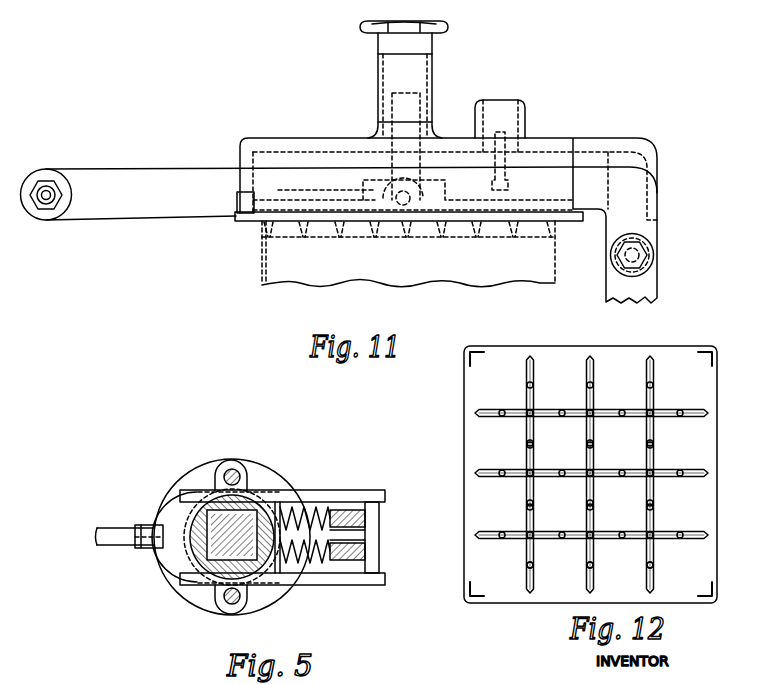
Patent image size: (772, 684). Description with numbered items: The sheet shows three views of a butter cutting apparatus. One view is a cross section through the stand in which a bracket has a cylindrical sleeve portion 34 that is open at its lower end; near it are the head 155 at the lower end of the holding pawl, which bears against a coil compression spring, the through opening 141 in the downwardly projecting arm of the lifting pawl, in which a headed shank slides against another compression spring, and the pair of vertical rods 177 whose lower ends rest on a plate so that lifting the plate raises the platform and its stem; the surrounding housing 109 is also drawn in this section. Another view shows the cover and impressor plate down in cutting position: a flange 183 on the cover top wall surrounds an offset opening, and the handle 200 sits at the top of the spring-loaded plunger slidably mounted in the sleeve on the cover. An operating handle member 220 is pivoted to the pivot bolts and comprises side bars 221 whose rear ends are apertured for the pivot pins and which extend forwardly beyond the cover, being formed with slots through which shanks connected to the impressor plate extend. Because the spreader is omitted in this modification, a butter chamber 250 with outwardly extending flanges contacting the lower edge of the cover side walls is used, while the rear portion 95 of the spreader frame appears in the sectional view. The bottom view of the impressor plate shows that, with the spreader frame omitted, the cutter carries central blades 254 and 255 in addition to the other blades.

In FIG. 5, the cylindrical sleeve portion 34 is at (200, 513).
In FIG. 11, the rear portion 95 is at (444, 49).
In FIG. 5, the housing 109 is at (334, 494).
In FIG. 5, the through opening 141 is at (396, 512).
In FIG. 5, the head 155 is at (396, 560).
In FIG. 5, the vertical rods 177 is at (233, 476).
In FIG. 11, the flange 183 is at (524, 100).
In FIG. 11, the handle 200 is at (450, 26).
In FIG. 11, the operating handle member 220 is at (92, 153).
In FIG. 11, the side bars 221 is at (157, 177).
In FIG. 11, the butter chamber 250 is at (243, 260).
In FIG. 12, the central blade 254 is at (586, 432).
In FIG. 12, the central blade 255 is at (574, 478).